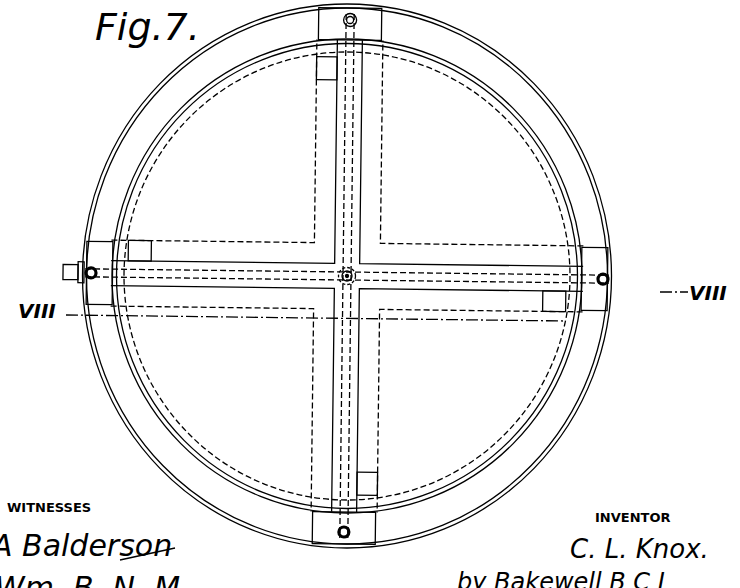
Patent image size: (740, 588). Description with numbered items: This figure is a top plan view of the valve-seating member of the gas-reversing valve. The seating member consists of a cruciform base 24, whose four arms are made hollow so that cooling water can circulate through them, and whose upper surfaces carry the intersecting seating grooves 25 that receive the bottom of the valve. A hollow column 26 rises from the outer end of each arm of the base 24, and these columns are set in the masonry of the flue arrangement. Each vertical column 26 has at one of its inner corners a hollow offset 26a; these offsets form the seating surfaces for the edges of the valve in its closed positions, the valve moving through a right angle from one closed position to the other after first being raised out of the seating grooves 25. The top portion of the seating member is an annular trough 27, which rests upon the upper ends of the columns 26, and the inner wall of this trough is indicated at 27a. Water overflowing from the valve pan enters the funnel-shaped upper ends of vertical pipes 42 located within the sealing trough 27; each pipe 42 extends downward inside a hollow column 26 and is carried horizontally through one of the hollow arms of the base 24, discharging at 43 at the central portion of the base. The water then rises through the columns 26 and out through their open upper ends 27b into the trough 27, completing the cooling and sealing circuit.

The cruciform base 24 is at (373, 217).
The seating grooves 25 is at (422, 289).
The hollow column 26 is at (604, 263).
The hollow offset 26a is at (552, 298).
The annular trough 27 is at (583, 382).
The inner ring 27a is at (527, 403).
The open upper ends 27b is at (627, 316).
The vertical pipe 42 is at (606, 283).
The discharge 43 is at (341, 283).